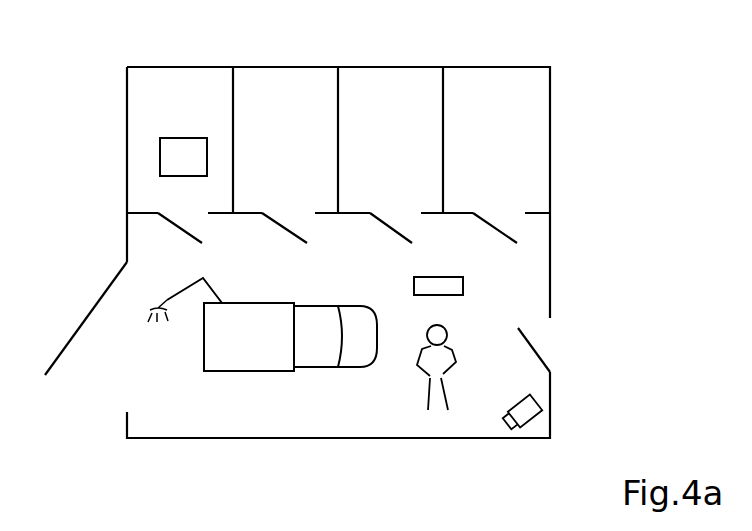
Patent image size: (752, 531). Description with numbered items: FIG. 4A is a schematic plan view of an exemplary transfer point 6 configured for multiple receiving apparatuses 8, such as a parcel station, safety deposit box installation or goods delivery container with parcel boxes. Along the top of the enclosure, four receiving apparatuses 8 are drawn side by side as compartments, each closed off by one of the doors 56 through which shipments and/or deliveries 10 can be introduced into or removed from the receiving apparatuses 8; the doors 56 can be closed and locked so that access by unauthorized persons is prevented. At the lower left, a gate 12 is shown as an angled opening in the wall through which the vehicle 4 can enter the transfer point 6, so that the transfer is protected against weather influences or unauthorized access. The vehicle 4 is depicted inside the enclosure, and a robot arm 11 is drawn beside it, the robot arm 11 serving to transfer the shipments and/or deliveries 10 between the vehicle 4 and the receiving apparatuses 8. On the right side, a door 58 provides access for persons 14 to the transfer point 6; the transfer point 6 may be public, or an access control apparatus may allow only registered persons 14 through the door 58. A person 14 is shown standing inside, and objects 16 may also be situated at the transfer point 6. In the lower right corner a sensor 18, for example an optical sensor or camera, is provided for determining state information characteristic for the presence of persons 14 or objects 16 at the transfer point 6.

The vehicle 4 is at (253, 393).
The transfer point 6 is at (82, 417).
The receiving apparatuses 8 is at (498, 80).
The shipments and/or deliveries 10 is at (175, 158).
The robot arm 11 is at (173, 300).
The gate 12 is at (80, 320).
The persons 14 is at (458, 366).
The objects 16 is at (442, 287).
The sensor 18 is at (527, 408).
The doors 56 is at (500, 228).
The door 58 is at (538, 350).